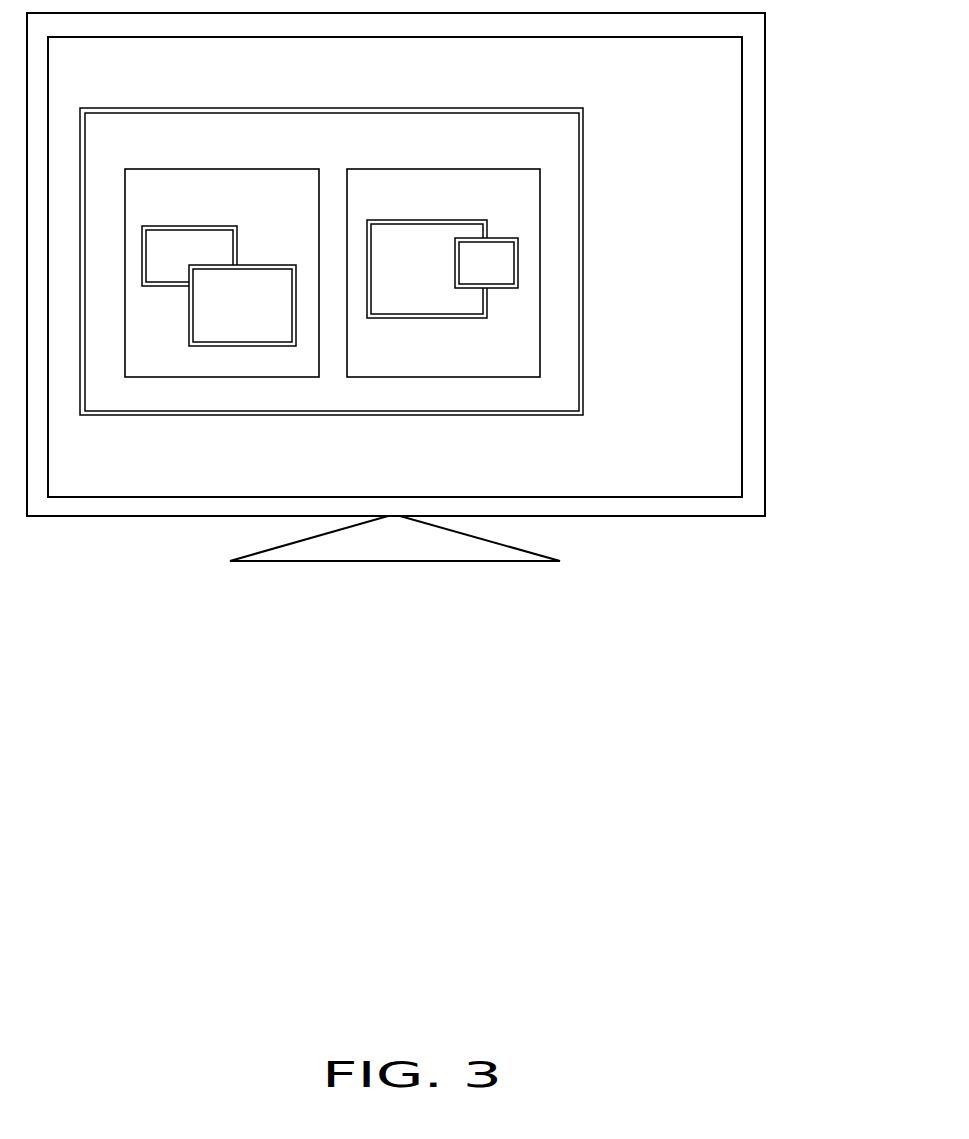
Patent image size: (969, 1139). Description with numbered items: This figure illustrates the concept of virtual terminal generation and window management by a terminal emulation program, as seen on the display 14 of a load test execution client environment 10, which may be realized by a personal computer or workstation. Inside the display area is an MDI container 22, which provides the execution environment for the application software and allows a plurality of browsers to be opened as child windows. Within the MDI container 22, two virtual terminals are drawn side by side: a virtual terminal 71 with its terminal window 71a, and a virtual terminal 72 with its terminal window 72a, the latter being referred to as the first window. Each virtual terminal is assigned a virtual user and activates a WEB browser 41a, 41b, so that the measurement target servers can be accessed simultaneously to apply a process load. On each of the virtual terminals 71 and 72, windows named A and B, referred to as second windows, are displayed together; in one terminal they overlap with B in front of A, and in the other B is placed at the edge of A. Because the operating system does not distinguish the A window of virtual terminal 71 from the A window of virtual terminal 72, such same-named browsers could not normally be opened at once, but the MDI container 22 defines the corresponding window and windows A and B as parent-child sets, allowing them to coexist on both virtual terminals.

The display 14 is at (453, 287).
The load test execution client environment 10 is at (767, 265).
The MDI container 22 is at (331, 300).
The virtual terminal 71 is at (202, 212).
The terminal window 71a is at (202, 212).
The WEB browser 41a is at (202, 212).
The virtual terminal 72 is at (457, 212).
The terminal window 72a is at (457, 212).
The virtual terminal 41b is at (457, 212).